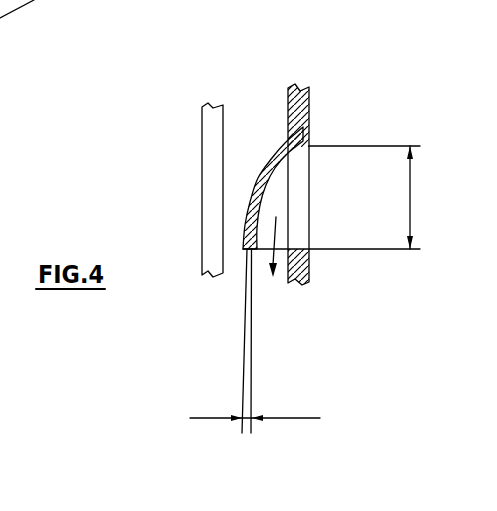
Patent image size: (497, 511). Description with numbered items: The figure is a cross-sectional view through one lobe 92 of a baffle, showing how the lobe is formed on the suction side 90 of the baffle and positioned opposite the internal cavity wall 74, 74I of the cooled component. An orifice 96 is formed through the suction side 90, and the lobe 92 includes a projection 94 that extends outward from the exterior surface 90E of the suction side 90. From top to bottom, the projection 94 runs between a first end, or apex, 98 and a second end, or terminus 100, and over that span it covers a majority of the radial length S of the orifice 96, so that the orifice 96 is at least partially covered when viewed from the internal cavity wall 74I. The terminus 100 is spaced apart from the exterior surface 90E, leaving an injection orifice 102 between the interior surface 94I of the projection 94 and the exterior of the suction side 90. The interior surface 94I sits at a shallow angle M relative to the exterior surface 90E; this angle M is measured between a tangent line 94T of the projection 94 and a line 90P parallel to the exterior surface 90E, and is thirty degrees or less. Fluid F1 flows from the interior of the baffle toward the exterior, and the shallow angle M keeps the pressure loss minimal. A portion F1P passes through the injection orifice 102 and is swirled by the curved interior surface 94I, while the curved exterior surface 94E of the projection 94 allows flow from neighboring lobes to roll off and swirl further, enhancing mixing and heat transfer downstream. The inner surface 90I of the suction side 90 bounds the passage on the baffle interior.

The internal cavity wall 74 is at (221, 82).
The internal cavity wall 74I is at (227, 167).
The suction side 90 is at (289, 88).
The bar inner surface 90I is at (310, 110).
The exterior surface 90E is at (287, 263).
The line parallel to the exterior surface 90P is at (253, 400).
The lobe 92 is at (241, 127).
The projection 94 is at (253, 180).
The interior surface 94I is at (276, 168).
The exterior surface 94E is at (247, 206).
The tangent line 94T is at (244, 393).
The orifice 96 is at (300, 198).
The apex 98 is at (288, 134).
The terminus 100 is at (243, 252).
The injection orifice 102 is at (264, 250).
The fluid F1 is at (330, 176).
The portion of fluid F1P is at (274, 238).
The radial length S is at (411, 192).
The angle M is at (280, 420).